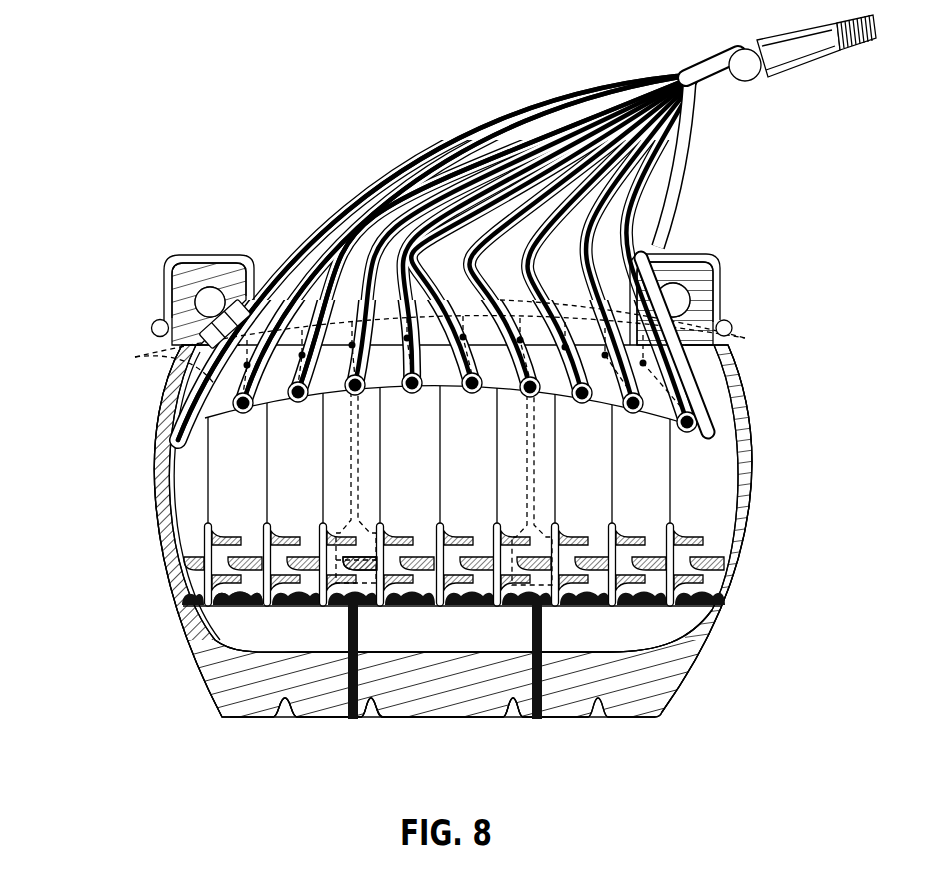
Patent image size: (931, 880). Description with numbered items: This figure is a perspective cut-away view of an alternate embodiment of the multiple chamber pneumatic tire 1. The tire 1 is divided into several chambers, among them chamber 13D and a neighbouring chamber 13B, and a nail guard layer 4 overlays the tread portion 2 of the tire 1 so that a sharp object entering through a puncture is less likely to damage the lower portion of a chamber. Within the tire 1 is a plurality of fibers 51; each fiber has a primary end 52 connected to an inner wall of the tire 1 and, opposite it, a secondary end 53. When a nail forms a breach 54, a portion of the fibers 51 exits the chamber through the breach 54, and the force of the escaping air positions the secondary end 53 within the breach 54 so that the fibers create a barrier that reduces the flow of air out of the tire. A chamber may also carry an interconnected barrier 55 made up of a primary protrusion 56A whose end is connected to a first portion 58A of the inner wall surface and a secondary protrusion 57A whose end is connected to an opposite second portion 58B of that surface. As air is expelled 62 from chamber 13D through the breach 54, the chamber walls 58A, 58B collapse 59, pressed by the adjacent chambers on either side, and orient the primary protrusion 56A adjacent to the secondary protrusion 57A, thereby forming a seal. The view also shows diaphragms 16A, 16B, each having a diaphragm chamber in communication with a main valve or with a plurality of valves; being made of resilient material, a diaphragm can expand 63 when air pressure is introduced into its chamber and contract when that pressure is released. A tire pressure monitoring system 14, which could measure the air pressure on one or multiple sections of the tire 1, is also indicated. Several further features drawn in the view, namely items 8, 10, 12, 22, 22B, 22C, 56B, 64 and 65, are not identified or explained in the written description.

The pneumatic tire 1 is at (230, 531).
The tread portion 2 is at (230, 704).
The nail guard layer 4 is at (213, 626).
The dashed guide path 8 is at (446, 336).
The fiber end dots 10 is at (421, 394).
The optical fiber cable 12 is at (663, 218).
The partition plate 13B is at (232, 508).
The chamber 13D is at (328, 425).
The tire pressure monitoring system 14 is at (230, 300).
The diaphragm 16A is at (277, 305).
The diaphragm 16B is at (314, 330).
The right side wall 22 is at (745, 427).
The left side wall 22B is at (148, 451).
The wall boundary line 22C is at (155, 364).
The plurality of fibers 51 is at (357, 596).
The primary end 52 is at (363, 545).
The secondary end 53 is at (368, 596).
The breach 54 is at (362, 606).
The interconnected barrier 55 is at (380, 590).
The primary protrusion 56A is at (353, 537).
The bubble layer 56B is at (232, 618).
The secondary protrusion 57A is at (373, 600).
The first portion of inner wall surface 58A is at (325, 472).
The second portion of inner wall surface 58B is at (390, 550).
The collapse 59 is at (355, 460).
The air being expelled 62 is at (363, 547).
The expand 63 is at (716, 426).
The guide path segment 64 is at (552, 330).
The sensor markers 65 is at (572, 342).